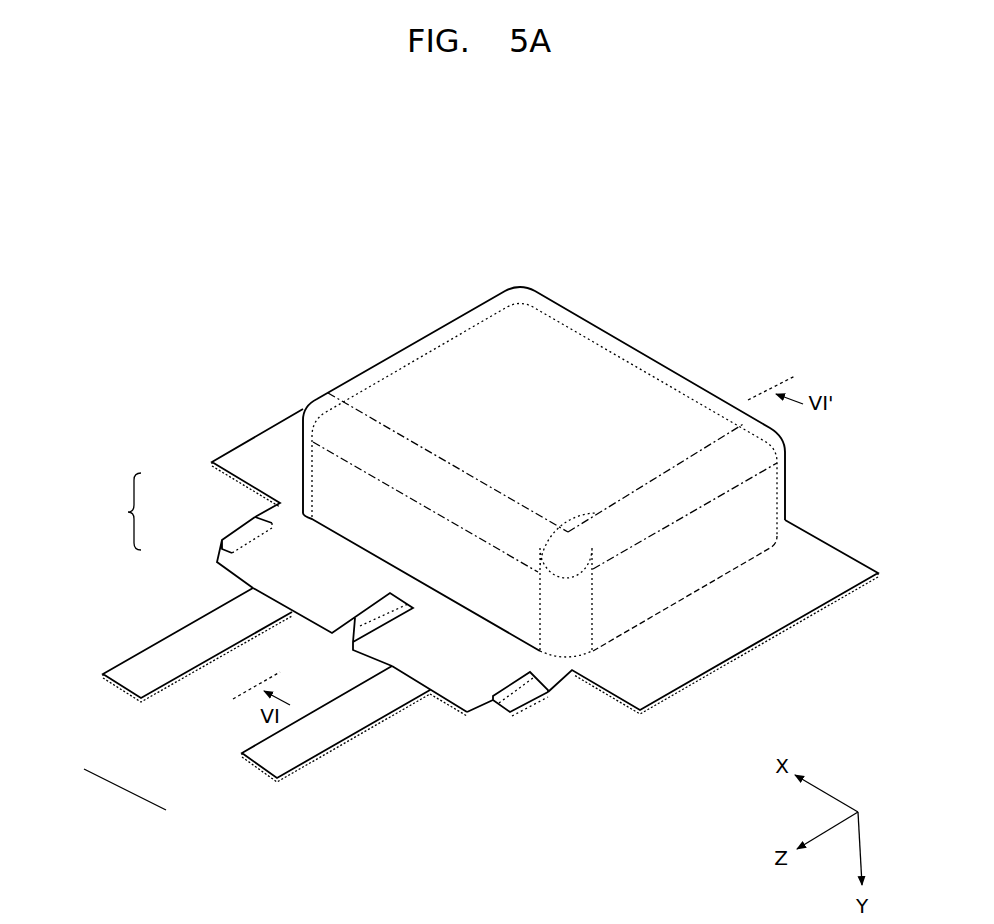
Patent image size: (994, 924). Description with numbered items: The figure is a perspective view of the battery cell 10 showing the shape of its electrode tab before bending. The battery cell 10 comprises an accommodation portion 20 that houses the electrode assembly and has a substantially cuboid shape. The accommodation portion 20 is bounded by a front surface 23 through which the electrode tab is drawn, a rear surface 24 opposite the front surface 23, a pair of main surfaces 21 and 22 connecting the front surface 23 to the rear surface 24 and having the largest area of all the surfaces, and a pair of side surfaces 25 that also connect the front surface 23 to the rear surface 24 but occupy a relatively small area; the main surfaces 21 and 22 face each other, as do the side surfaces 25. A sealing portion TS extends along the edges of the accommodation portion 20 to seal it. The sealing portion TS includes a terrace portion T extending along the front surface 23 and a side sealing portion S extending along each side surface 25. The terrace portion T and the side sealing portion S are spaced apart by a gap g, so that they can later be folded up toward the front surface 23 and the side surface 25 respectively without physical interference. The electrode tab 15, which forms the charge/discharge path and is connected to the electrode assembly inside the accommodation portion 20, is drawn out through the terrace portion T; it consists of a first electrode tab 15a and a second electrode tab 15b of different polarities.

The battery cell 10 is at (565, 235).
The accommodation portion 20 is at (678, 328).
The first main surface 21 is at (482, 378).
The second main surface 22 is at (574, 678).
The front surface 23 is at (480, 578).
The rear surface 24 is at (727, 384).
The side surface 25 is at (683, 578).
The electrode tab 15 is at (125, 791).
The first electrode tab 15a is at (263, 760).
The second electrode tab 15b is at (132, 688).
The side sealing portion S is at (822, 566).
The terrace portion T is at (222, 556).
The sealing portion TS is at (118, 511).
The gap g is at (548, 707).